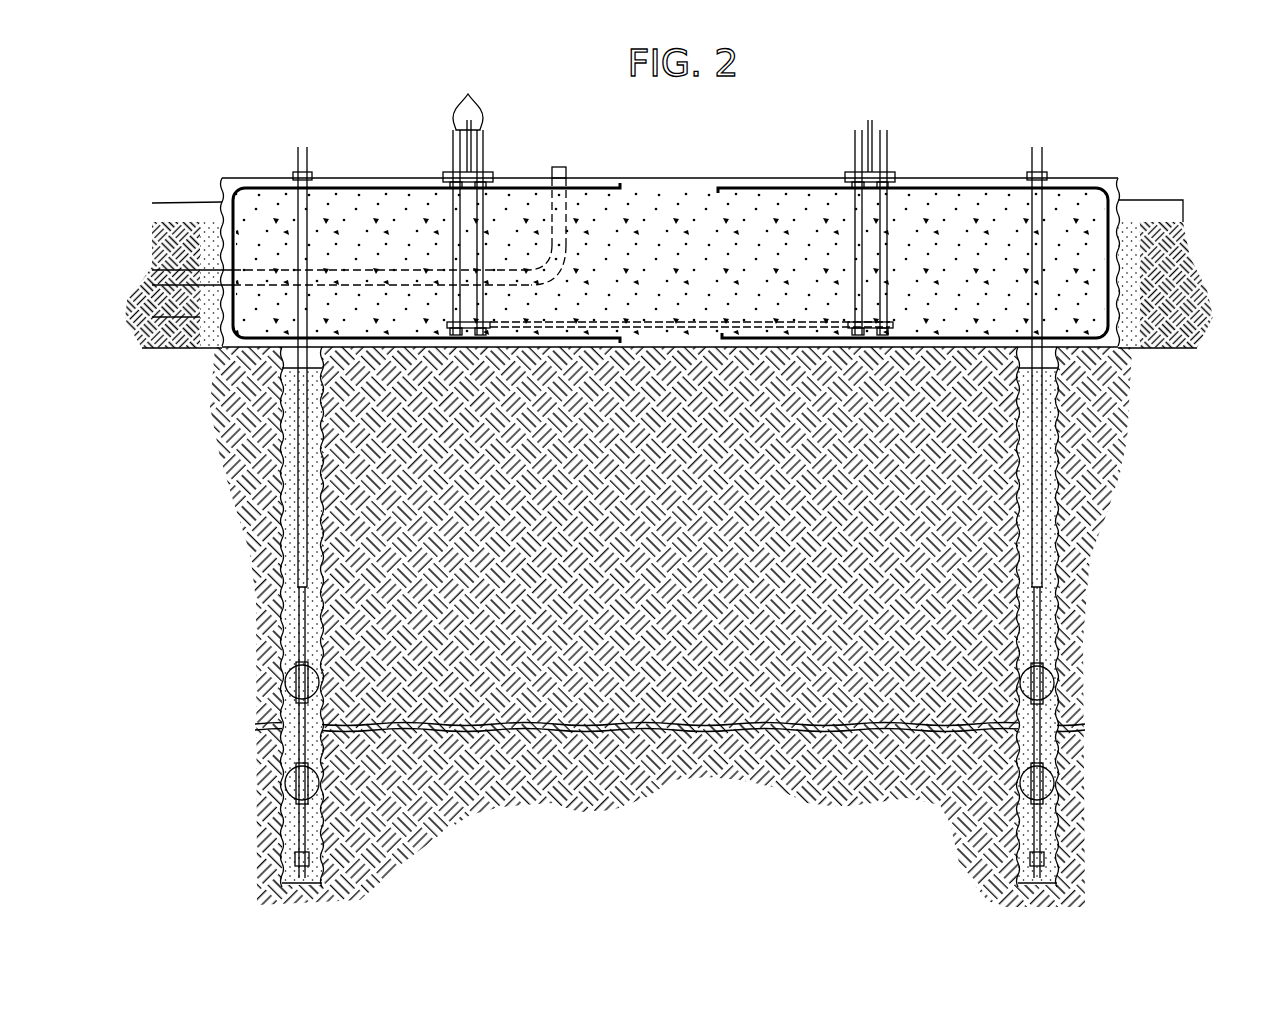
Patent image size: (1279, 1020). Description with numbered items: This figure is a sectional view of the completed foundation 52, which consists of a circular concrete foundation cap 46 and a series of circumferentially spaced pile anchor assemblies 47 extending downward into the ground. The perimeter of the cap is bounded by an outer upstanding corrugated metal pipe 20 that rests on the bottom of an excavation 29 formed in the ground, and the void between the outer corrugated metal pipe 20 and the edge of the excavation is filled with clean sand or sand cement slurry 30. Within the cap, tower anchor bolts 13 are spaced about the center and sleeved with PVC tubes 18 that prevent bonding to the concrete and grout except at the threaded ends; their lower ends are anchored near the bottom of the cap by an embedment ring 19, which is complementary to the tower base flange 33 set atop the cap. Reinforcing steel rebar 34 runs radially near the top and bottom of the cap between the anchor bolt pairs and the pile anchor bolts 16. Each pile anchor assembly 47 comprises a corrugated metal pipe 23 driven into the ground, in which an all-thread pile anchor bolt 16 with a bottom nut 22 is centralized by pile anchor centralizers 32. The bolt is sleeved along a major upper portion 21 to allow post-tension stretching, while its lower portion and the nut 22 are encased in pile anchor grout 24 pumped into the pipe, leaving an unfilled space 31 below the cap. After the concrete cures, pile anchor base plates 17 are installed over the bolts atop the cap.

The tower anchor bolts 13 is at (468, 201).
The pile anchor bolts 16 is at (1043, 615).
The pile anchor base plates 17 is at (297, 176).
The PVC tubes 18 is at (887, 235).
The embedment ring 19 is at (643, 322).
The outer corrugated metal pipe 20 is at (142, 333).
The major upper portion 21 is at (1047, 527).
The nut 22 is at (284, 850).
The pile anchor corrugated metal pipe 23 is at (284, 648).
The pile anchor grout 24 is at (1053, 458).
The excavation 29 is at (1202, 289).
The sand or sand cement slurry 30 is at (1160, 350).
The unfilled space 31 is at (1057, 370).
The pile anchor centralizers 32 is at (284, 763).
The tower base flange 33 is at (887, 170).
The reinforcing steel rebar 34 is at (600, 183).
The foundation cap 46 is at (692, 177).
The pile anchor assemblies 47 is at (1065, 830).
The foundation 52 is at (1077, 145).